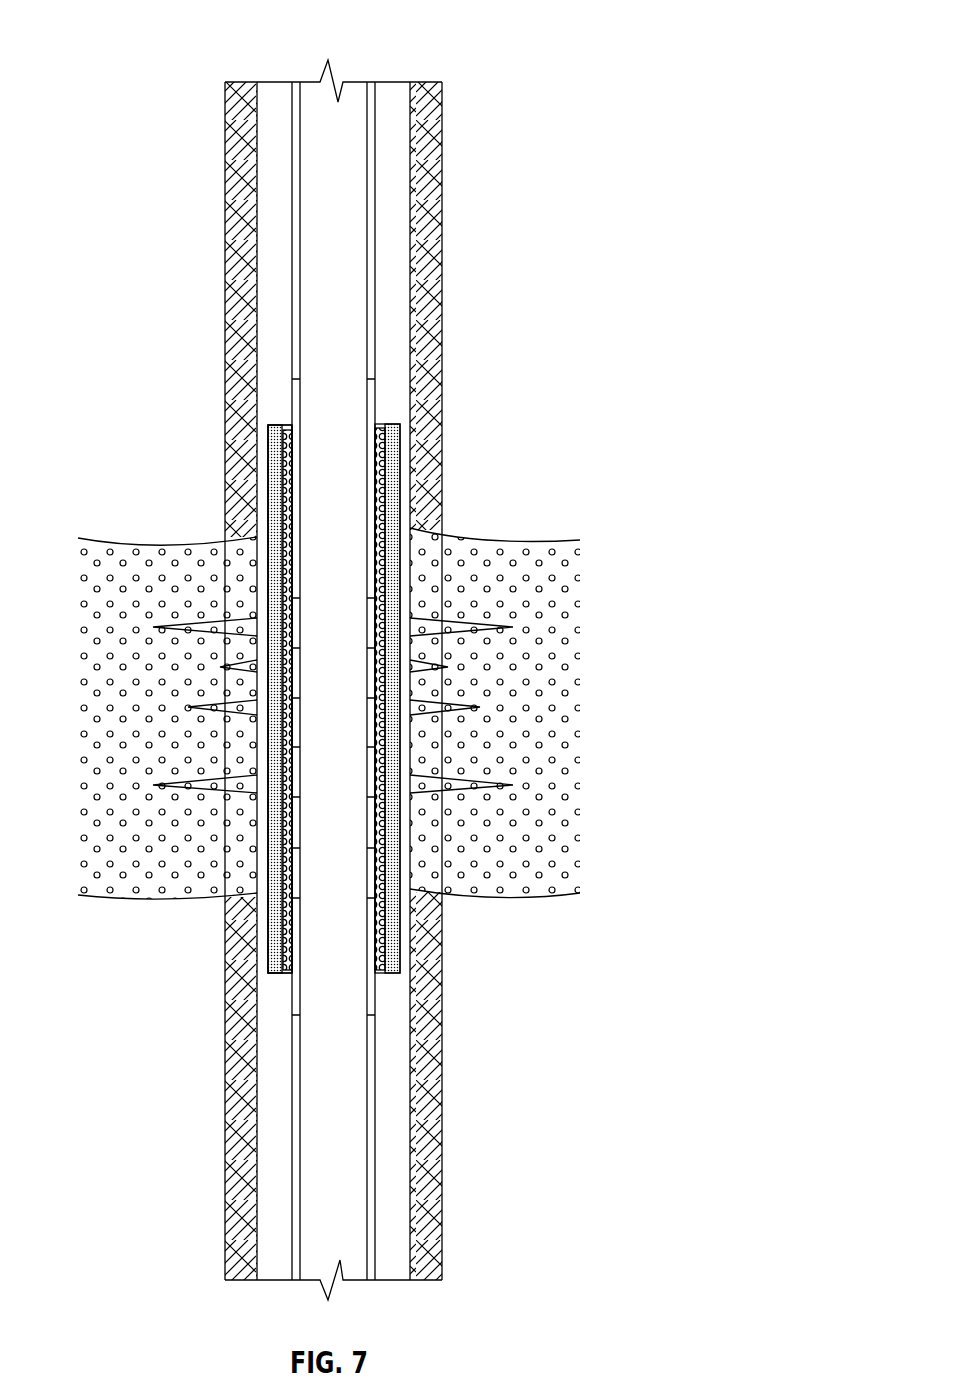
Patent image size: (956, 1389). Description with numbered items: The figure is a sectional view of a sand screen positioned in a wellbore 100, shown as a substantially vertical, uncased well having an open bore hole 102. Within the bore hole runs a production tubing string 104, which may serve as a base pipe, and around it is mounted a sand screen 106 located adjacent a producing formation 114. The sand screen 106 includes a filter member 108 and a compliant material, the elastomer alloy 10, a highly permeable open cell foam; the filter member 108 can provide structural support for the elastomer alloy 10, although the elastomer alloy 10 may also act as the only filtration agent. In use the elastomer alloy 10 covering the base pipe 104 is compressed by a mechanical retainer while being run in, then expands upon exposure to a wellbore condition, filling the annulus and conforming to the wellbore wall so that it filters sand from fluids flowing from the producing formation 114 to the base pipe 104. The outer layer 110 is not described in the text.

The wellbore 100 is at (522, 33).
The open bore hole 102 is at (258, 251).
The production tubing string 104 is at (377, 242).
The sand screen 106 is at (406, 938).
The filter member 108 is at (380, 500).
The outer shroud 110 is at (390, 910).
The producing formation 114 is at (538, 620).
The elastomer alloy 10 is at (400, 931).